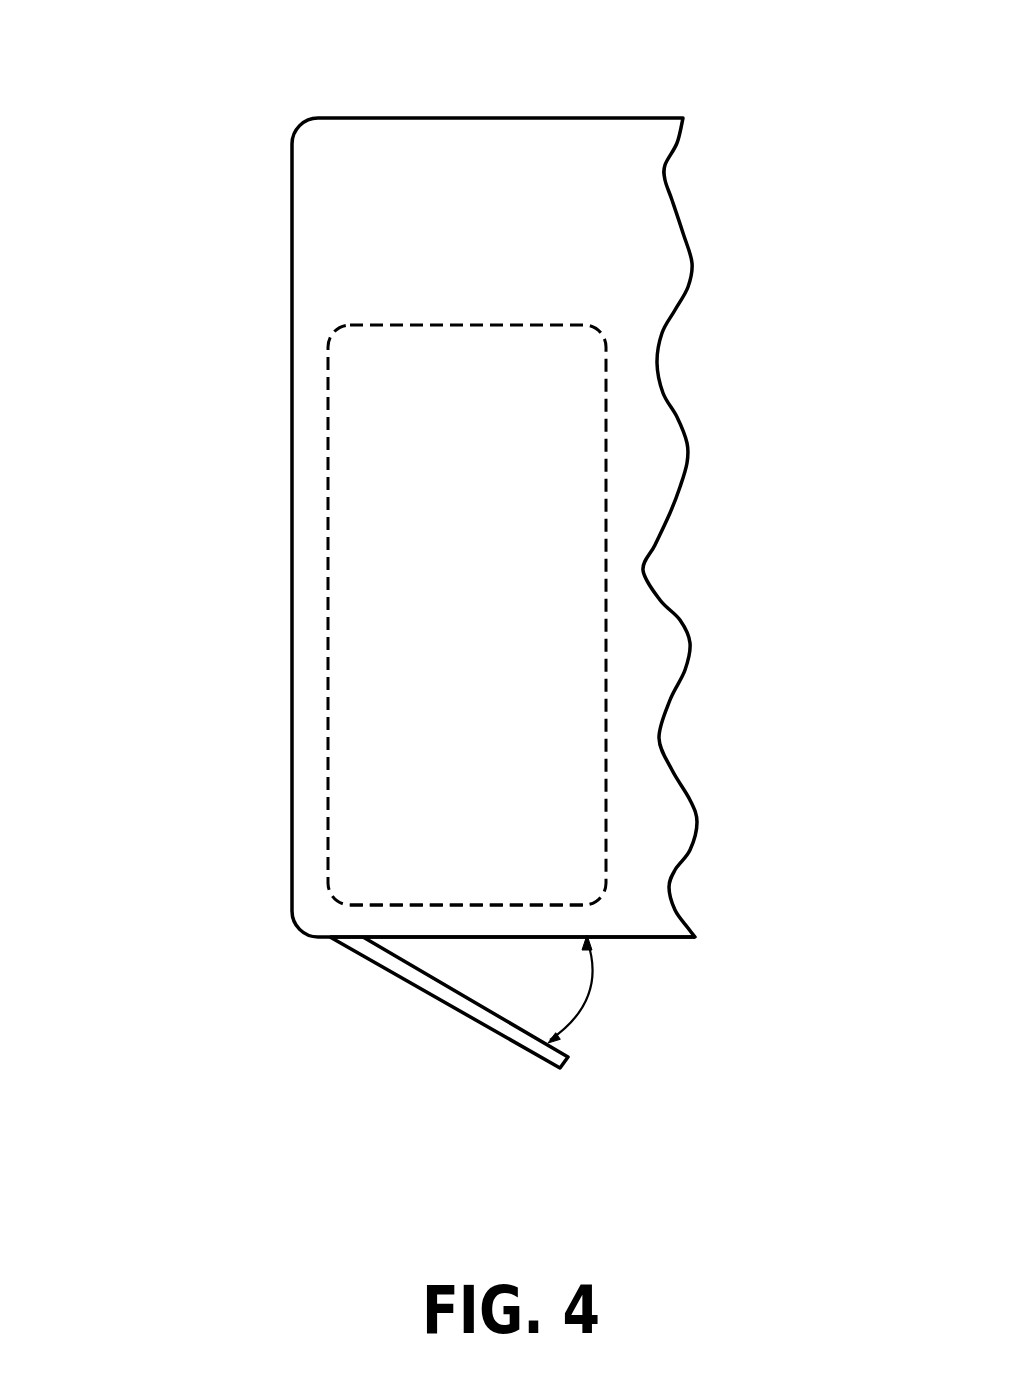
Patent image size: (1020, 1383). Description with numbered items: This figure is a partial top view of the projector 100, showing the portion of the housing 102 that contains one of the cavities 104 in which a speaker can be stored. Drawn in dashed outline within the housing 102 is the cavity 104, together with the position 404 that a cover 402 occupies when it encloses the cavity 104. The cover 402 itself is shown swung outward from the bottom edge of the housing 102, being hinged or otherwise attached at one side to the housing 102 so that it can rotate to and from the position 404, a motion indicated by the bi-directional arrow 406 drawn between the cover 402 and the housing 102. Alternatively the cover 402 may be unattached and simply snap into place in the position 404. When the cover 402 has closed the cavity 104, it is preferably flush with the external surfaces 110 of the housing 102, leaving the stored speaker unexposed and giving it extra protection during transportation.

The projector 100 is at (125, 632).
The housing 102 is at (535, 157).
The cavities 104 is at (493, 633).
The external surfaces 110 is at (597, 938).
The covers 402 is at (418, 987).
The position 404 is at (457, 920).
The bi-directional arrow 406 is at (583, 998).